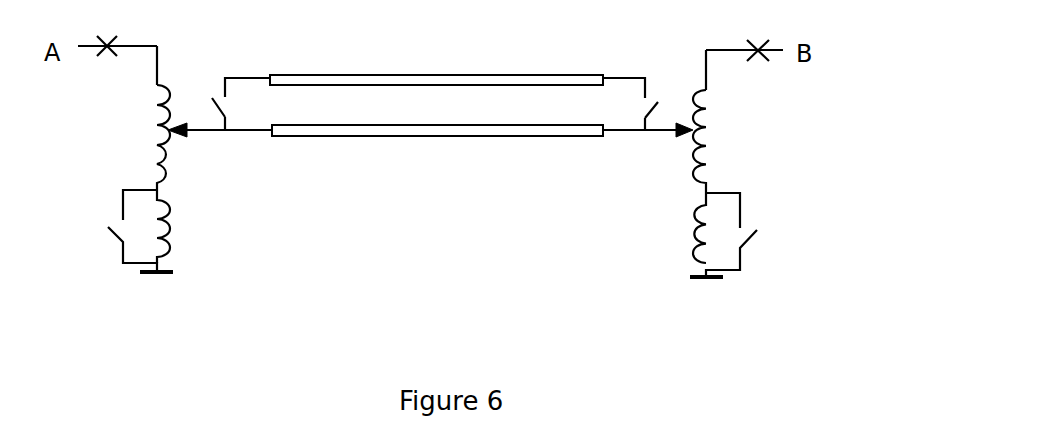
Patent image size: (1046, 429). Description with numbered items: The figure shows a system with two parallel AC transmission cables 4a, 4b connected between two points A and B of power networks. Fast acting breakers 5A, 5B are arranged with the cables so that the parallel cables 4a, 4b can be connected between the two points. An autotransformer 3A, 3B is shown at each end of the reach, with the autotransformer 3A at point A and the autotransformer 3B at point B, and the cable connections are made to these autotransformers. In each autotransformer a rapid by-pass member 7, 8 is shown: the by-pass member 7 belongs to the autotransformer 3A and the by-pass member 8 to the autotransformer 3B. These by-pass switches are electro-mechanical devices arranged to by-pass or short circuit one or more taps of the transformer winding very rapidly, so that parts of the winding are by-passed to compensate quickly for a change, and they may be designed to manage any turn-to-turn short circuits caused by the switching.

The autotransformer 3A is at (187, 165).
The autotransformer 3B is at (658, 162).
The AC cable 4a is at (412, 70).
The AC cable 4b is at (445, 143).
The fast acting breaker 5A is at (212, 85).
The fast acting breaker 5B is at (648, 79).
The rapid by-pass member 7 is at (177, 253).
The rapid by-pass member 8 is at (677, 257).